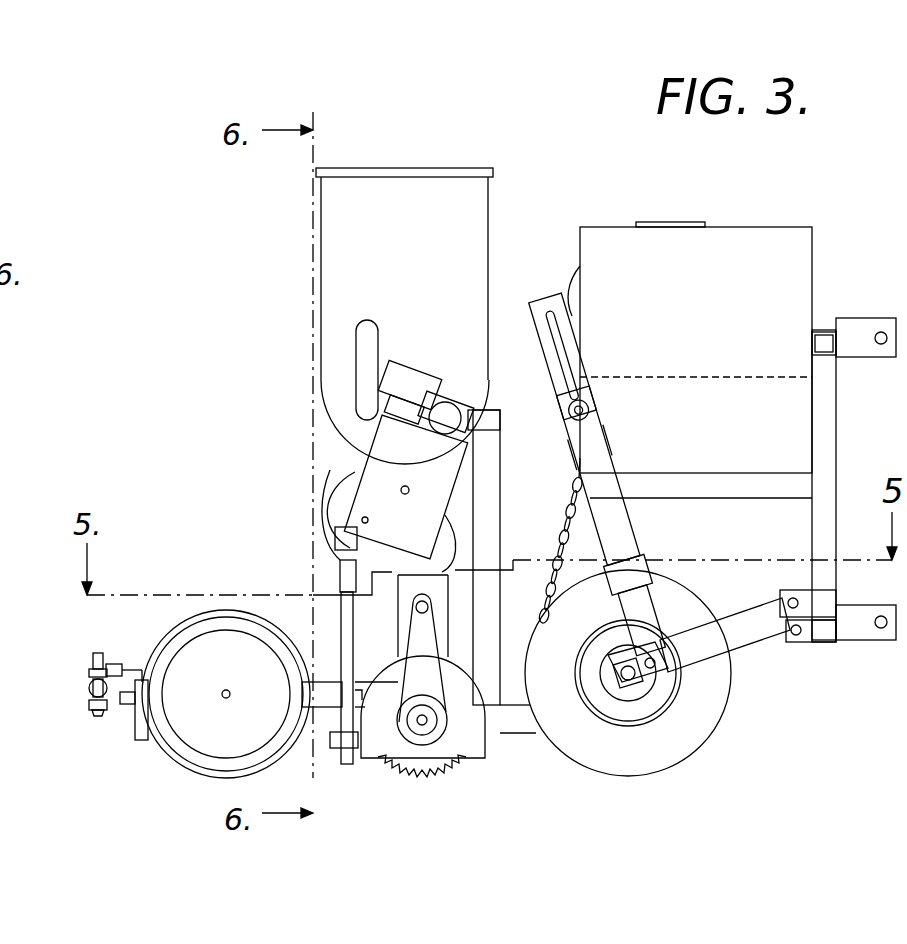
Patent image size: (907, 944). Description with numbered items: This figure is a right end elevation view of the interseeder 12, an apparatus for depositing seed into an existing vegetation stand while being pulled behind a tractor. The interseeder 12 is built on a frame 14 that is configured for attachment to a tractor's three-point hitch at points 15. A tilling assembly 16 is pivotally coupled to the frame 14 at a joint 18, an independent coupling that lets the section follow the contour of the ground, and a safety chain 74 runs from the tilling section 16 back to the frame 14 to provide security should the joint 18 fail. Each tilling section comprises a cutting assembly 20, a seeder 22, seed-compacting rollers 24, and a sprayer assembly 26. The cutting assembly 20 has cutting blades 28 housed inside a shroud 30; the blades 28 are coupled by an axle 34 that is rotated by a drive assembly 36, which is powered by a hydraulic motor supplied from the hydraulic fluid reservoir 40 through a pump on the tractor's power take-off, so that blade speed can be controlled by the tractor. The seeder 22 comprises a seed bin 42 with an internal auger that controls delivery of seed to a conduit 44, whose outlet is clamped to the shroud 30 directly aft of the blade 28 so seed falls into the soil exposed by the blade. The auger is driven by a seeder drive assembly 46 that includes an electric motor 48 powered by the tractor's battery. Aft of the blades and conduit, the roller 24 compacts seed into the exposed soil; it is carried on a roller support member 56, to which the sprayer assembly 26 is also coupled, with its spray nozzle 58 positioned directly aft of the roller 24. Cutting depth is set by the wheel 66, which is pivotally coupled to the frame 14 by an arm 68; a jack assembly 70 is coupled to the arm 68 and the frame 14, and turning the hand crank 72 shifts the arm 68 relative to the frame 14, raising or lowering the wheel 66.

The interseeder 12 is at (582, 166).
The frame 14 is at (828, 440).
The attachment points 15 is at (868, 324).
The tilling assembly 16 is at (754, 682).
The joint 18 is at (798, 638).
The cutting assembly 20 is at (356, 775).
The seeder 22 is at (300, 248).
The seed-compacting roller 24 is at (195, 766).
The sprayer assembly 26 is at (84, 652).
The cutting blade 28 is at (441, 770).
The shroud 30 is at (378, 750).
The axle 34 is at (428, 722).
The drive assembly 36 is at (448, 618).
The hydraulic fluid reservoir 40 is at (756, 234).
The seed bin 42 is at (470, 232).
The conduit 44 is at (318, 615).
The seeder drive assembly 46 is at (352, 454).
The electric motor 48 is at (412, 380).
The roller support member 56 is at (357, 688).
The spray nozzle 58 is at (90, 710).
The wheel 66 is at (672, 752).
The arm 68 is at (750, 620).
The jack assembly 70 is at (622, 542).
The hand crank 72 is at (570, 374).
The safety chain 74 is at (574, 536).